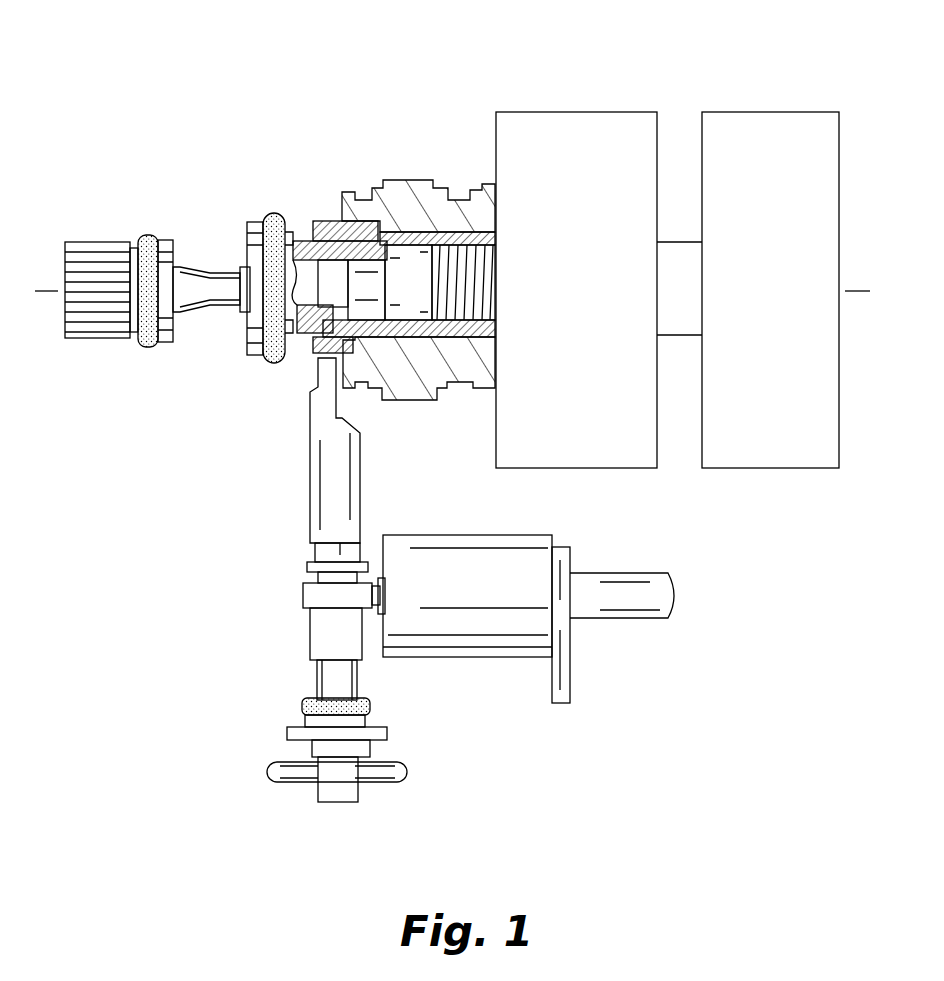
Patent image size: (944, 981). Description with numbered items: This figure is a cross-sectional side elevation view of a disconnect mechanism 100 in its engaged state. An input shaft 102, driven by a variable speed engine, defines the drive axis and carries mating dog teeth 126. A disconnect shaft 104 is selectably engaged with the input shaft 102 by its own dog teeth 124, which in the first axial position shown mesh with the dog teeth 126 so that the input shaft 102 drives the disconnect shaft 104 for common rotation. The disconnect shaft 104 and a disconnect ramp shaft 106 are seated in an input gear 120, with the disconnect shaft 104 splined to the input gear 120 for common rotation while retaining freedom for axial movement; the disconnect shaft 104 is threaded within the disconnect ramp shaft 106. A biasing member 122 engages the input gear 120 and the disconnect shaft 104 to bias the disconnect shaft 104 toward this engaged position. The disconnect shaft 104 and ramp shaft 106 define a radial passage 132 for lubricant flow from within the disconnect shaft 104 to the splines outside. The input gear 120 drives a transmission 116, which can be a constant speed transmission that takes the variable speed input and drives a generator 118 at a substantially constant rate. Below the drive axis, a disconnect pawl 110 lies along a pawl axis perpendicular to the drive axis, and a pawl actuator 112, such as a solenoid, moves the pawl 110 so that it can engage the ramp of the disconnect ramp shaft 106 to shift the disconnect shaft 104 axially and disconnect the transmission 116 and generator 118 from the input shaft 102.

The disconnect mechanism 100 is at (130, 113).
The input shaft 102 is at (150, 348).
The disconnect shaft 104 is at (412, 230).
The disconnect ramp shaft 106 is at (322, 208).
The disconnect pawl 110 is at (310, 483).
The pawl actuator 112 is at (469, 646).
The transmission 116 is at (582, 298).
The generator 118 is at (784, 298).
The input gear 120 is at (397, 176).
The biasing member 122 is at (476, 345).
The dog teeth 124 is at (308, 225).
The mating dog teeth 126 is at (300, 342).
The radial passage 132 is at (370, 290).